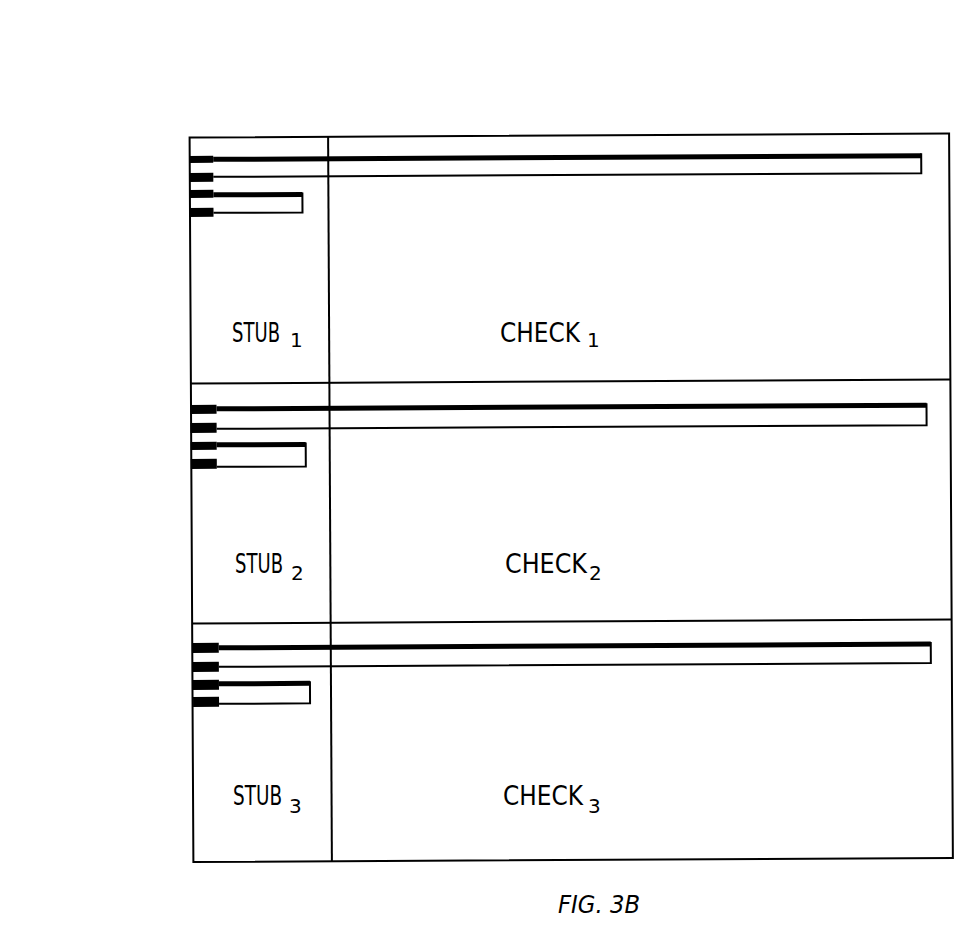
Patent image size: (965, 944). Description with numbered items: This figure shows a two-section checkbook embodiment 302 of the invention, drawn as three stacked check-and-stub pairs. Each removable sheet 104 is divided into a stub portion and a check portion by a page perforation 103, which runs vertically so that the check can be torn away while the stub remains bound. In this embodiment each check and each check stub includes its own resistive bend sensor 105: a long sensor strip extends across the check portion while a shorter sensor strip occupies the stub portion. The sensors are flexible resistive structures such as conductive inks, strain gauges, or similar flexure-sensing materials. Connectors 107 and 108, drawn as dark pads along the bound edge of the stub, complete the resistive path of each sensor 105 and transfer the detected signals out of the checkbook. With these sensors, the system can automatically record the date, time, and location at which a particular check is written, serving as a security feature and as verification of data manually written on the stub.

The two-section checkbook embodiment 302 is at (580, 82).
The page perforation 103 is at (328, 136).
The removable sheet 104 is at (730, 148).
The resistive bend sensor 105 is at (235, 202).
The connector 107 is at (189, 178).
The connector 108 is at (189, 160).